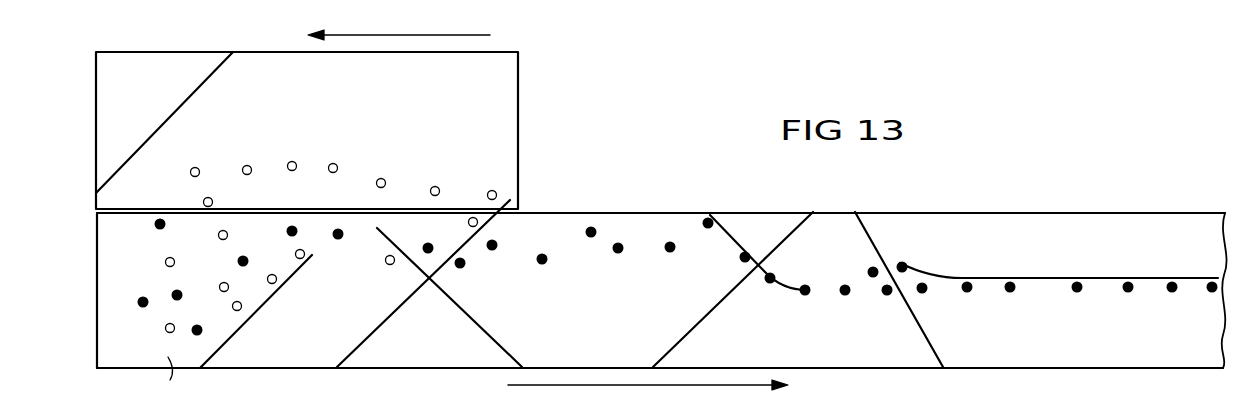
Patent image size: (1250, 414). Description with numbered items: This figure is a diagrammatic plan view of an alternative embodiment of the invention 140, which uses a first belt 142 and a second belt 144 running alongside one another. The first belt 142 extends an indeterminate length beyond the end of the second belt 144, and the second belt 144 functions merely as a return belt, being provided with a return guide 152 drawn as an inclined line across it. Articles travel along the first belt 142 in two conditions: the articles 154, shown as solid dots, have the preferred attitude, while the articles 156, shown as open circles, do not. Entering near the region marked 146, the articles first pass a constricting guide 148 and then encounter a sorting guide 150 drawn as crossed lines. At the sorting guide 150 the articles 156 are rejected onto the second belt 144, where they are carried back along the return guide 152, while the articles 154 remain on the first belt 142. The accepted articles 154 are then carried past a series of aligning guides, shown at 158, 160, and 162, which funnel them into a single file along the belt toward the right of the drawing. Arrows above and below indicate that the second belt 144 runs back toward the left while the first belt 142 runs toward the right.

The alternative embodiment of the invention 140 is at (688, 152).
The first belt 142 is at (636, 310).
The second belt 144 is at (508, 100).
The inlet region 146 is at (169, 385).
The constricting guide 148 is at (270, 298).
The sorting guide 150 is at (390, 317).
The return guide 152 is at (192, 97).
The articles in preferred attitude 154 is at (177, 295).
The rejected articles 156 is at (248, 166).
The aligning guide 158 is at (743, 252).
The aligning guide 160 is at (913, 335).
The aligning guide 162 is at (898, 252).